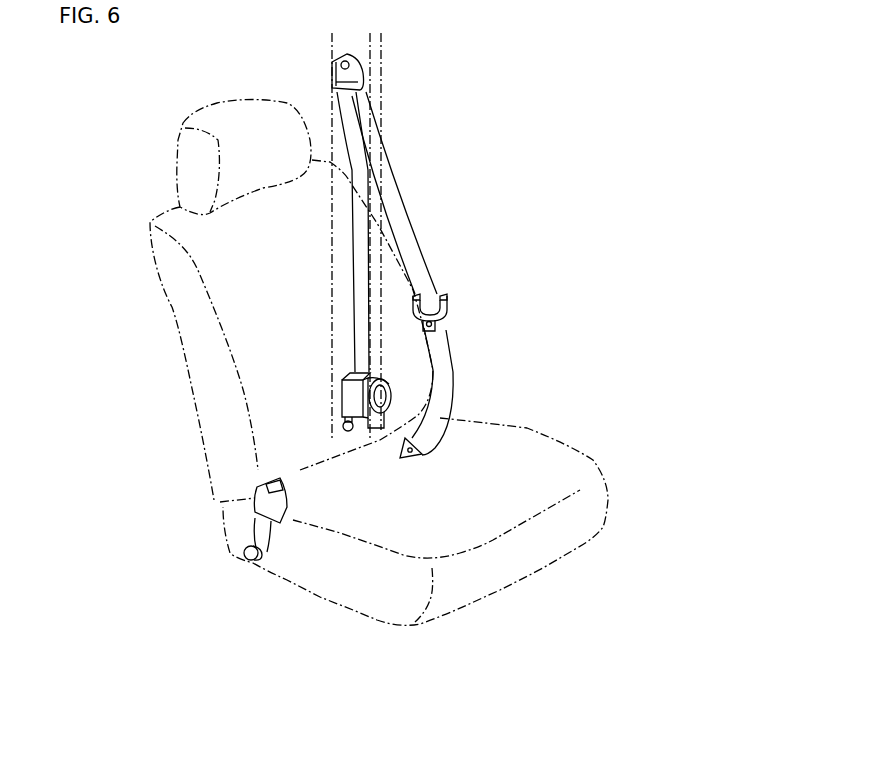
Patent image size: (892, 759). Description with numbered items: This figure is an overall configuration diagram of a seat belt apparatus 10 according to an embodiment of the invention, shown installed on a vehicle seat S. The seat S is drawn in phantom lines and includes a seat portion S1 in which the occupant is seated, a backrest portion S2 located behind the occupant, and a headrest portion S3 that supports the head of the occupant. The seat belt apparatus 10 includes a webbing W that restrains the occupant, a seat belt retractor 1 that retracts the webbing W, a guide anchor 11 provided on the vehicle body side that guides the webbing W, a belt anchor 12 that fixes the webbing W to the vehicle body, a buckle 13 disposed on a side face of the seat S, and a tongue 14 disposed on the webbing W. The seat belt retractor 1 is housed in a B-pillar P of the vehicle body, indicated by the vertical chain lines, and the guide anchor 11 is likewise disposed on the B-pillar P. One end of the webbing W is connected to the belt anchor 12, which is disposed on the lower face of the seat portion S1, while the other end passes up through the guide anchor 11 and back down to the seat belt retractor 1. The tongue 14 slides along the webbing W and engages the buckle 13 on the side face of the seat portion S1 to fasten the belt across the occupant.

The seat belt retractor 1 is at (352, 397).
The seat belt apparatus 10 is at (452, 242).
The guide anchor 11 is at (332, 68).
The belt anchor 12 is at (412, 462).
The buckle 13 is at (260, 496).
The tongue 14 is at (447, 302).
The B-pillar P is at (376, 52).
The webbing W is at (400, 186).
The seat S is at (127, 190).
The seat portion S1 is at (414, 521).
The backrest portion S2 is at (291, 330).
The headrest portion S3 is at (244, 157).